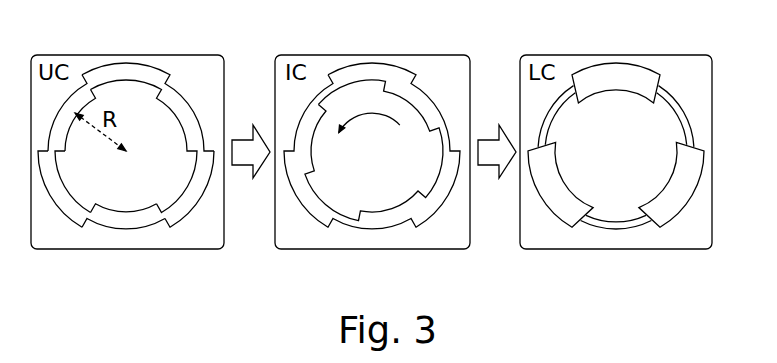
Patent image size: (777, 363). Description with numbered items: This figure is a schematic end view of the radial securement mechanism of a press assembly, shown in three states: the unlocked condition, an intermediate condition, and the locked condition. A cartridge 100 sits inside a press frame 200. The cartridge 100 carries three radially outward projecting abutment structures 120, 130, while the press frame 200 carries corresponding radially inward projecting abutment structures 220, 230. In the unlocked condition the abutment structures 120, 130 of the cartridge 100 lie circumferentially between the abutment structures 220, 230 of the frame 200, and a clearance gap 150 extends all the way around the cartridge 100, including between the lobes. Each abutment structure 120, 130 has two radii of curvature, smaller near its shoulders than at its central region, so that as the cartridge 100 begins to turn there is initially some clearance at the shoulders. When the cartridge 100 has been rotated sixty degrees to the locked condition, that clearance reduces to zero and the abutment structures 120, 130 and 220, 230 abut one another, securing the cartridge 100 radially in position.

The cartridge 100 is at (143, 108).
The press frame 200 is at (200, 78).
The radially outward projecting abutment structure 120 is at (70, 188).
The radially outward projecting abutment structure 130 is at (69, 228).
The radially inward projecting abutment structure 220 is at (130, 227).
The radially inward projecting abutment structure 230 is at (124, 254).
The clearance gap 150 is at (192, 197).